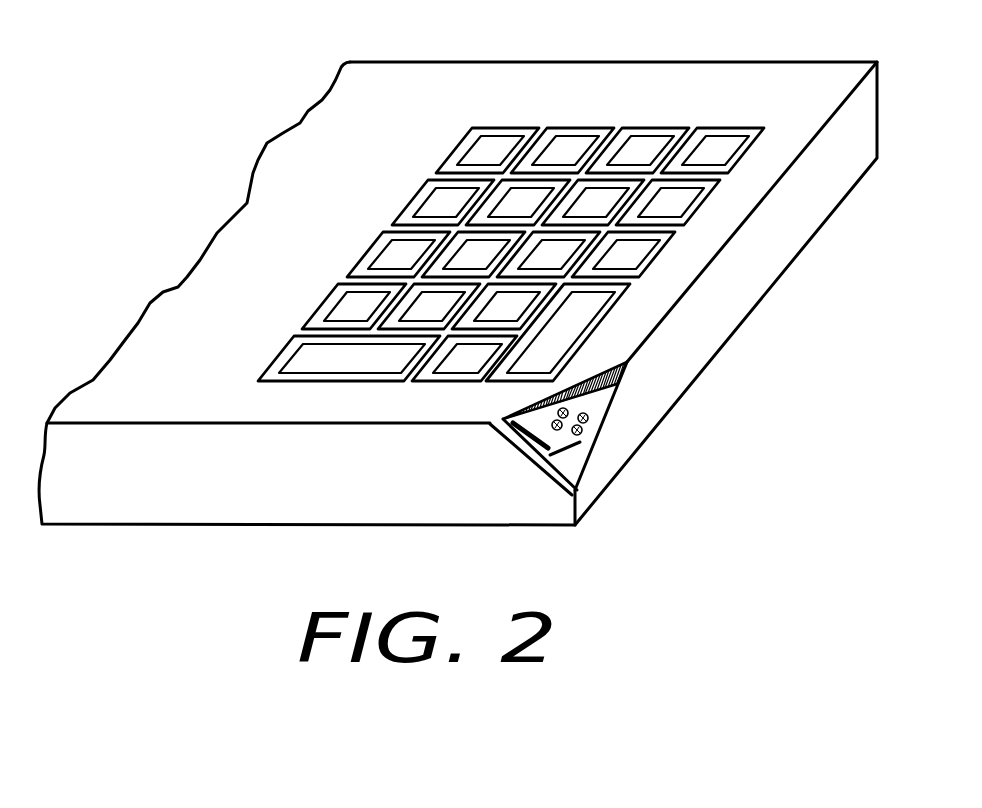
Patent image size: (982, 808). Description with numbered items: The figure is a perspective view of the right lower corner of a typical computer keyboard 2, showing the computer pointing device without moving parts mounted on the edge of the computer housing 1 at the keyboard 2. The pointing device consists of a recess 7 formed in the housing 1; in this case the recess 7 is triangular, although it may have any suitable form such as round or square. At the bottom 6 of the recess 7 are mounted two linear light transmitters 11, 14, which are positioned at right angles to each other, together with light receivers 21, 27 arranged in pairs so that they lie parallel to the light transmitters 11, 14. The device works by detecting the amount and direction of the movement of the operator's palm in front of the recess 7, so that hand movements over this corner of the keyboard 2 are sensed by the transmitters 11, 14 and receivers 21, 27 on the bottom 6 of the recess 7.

The computer housing 1 is at (205, 289).
The keyboard 2 is at (482, 153).
The bottom of the recess 6 is at (597, 404).
The recess 7 is at (627, 370).
The linear light transmitter 11 is at (503, 436).
The linear light transmitter 14 is at (543, 460).
The light receiver 21 is at (598, 440).
The light receiver 27 is at (590, 428).